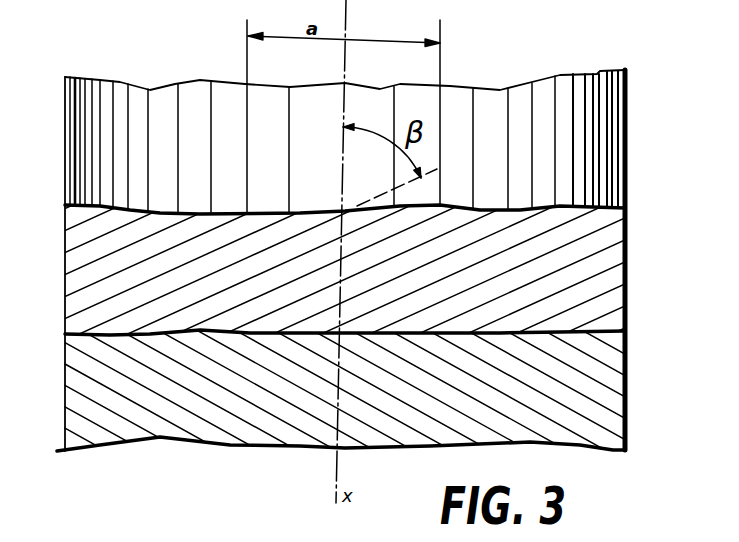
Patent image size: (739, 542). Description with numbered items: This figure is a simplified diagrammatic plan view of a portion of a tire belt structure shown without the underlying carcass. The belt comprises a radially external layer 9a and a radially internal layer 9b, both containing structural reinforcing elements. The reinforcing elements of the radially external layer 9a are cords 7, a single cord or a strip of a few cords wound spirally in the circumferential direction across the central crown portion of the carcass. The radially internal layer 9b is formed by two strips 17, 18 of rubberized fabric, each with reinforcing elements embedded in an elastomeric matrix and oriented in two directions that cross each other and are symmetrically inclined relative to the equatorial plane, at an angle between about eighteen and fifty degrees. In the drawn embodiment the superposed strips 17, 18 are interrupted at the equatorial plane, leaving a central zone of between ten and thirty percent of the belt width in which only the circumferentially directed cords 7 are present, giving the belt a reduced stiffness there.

The cords 7 is at (128, 132).
The radially external layer 9a is at (584, 166).
The strip of rubberized fabric 17 is at (594, 262).
The radially internal layer 9b is at (638, 328).
The strip of rubberized fabric 18 is at (596, 393).